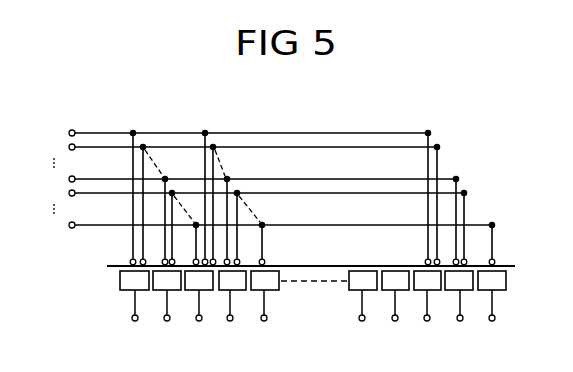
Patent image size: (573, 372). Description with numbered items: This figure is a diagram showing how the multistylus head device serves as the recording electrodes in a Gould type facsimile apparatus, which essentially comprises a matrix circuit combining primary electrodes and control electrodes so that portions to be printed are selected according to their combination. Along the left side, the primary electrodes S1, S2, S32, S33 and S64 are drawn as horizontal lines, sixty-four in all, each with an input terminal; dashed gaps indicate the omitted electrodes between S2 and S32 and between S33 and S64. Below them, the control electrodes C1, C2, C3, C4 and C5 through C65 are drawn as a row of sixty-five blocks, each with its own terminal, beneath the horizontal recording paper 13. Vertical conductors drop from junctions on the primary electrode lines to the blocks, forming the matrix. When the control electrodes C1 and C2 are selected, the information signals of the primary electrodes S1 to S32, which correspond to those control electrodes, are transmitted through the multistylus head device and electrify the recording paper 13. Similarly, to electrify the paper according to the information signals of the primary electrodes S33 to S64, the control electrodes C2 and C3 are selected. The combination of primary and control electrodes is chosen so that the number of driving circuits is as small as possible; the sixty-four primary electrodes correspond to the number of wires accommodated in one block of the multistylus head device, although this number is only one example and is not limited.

The recording paper 13 is at (107, 266).
The primary electrode S1 is at (235, 193).
The primary electrode S2 is at (240, 201).
The primary electrode S32 is at (249, 216).
The primary electrode S33 is at (253, 224).
The primary electrode S64 is at (267, 239).
The control electrode C1 is at (134, 308).
The control electrode C2 is at (167, 308).
The control electrode C3 is at (199, 308).
The control electrode C4 is at (232, 308).
The control electrode C5 is at (265, 308).
The control electrode C65 is at (495, 308).